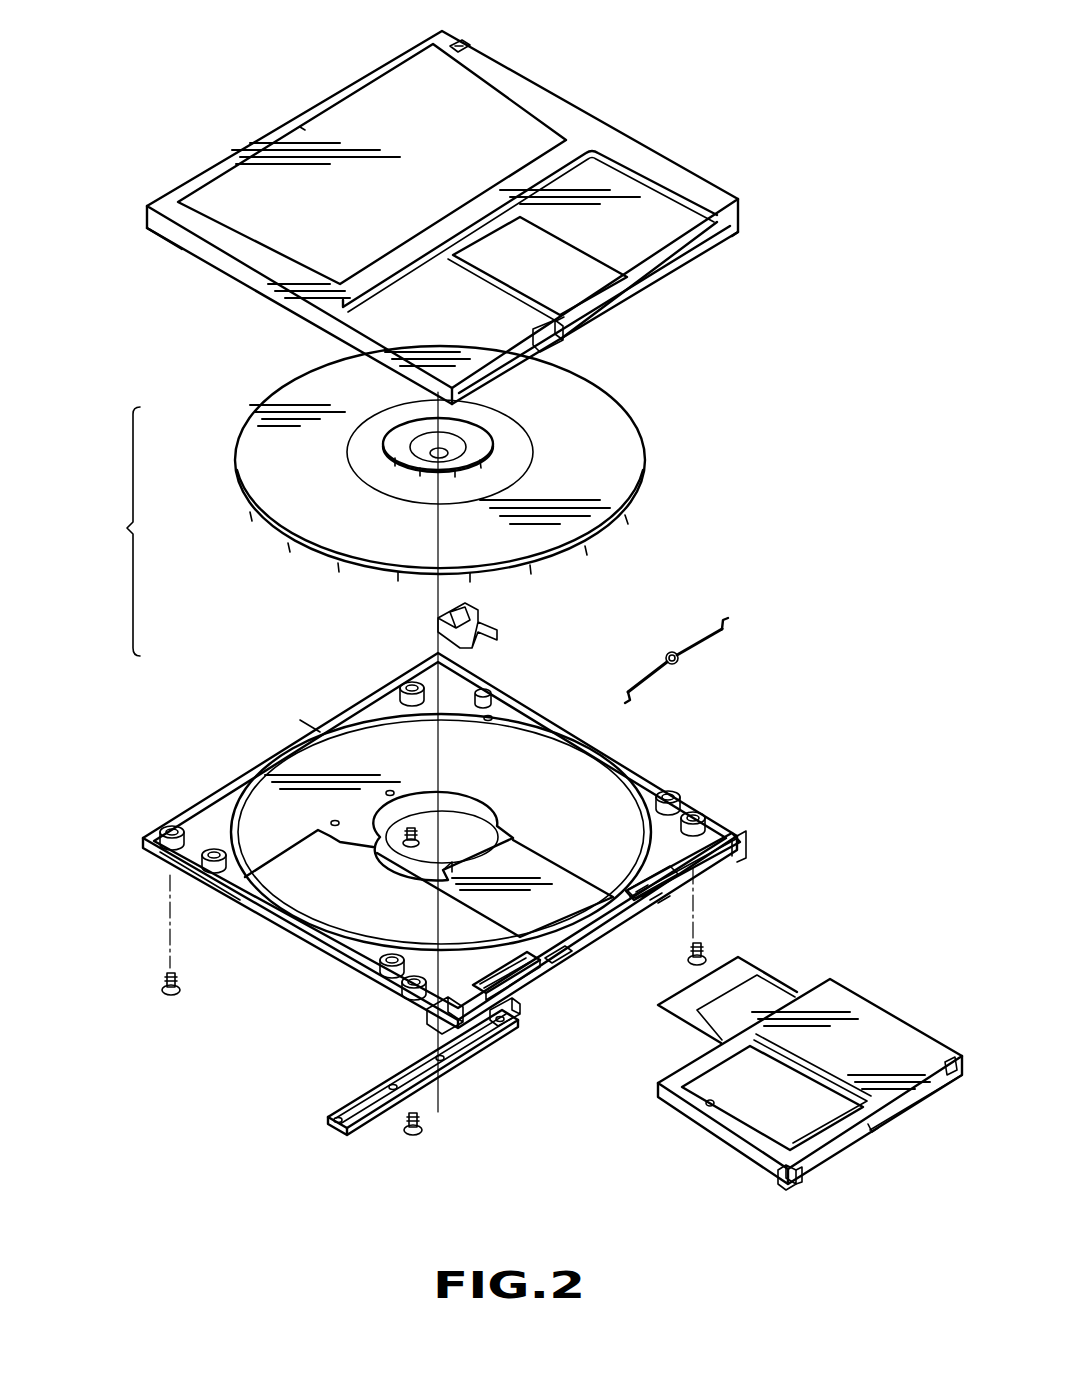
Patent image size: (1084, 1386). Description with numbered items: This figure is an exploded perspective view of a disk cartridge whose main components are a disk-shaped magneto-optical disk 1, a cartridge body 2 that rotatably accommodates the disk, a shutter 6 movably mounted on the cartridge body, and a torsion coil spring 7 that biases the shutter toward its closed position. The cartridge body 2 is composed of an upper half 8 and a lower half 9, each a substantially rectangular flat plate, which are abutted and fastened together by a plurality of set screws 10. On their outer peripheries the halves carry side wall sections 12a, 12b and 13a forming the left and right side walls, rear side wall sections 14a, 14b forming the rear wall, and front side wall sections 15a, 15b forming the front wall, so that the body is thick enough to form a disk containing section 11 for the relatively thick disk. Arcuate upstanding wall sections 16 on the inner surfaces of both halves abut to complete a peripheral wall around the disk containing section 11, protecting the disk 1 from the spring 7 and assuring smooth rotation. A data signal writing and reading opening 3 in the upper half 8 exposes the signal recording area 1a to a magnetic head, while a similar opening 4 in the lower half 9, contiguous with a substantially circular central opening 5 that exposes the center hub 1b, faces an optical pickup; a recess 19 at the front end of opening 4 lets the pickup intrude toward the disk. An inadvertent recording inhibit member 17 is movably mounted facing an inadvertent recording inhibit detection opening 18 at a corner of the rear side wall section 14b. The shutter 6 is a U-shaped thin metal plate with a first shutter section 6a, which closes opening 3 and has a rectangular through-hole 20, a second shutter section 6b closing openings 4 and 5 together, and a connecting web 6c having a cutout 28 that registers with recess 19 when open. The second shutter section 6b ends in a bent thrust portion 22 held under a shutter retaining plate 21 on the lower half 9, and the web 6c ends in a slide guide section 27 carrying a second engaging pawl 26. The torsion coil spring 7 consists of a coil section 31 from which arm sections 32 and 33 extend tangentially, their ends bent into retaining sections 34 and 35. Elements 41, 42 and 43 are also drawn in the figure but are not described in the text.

The magneto-optical disk 1 is at (484, 464).
The signal recording area 1a is at (605, 470).
The center hub 1b is at (480, 448).
The cartridge body 2 is at (114, 531).
The data signal writing and reading opening 3 is at (598, 262).
The data signal writing and reading opening 4 is at (538, 860).
The central opening 5 is at (476, 824).
The shutter 6 is at (805, 1068).
The first shutter section 6a is at (848, 1010).
The second shutter section 6b is at (748, 968).
The connecting section or web 6c is at (902, 1105).
The torsion coil spring 7 is at (682, 643).
The upper half 8 is at (290, 124).
The lower half 9 is at (444, 835).
The set screws 10 is at (178, 996).
The disk containing section 11 is at (318, 762).
The side wall section 12a is at (222, 260).
The side wall section 12b is at (258, 916).
The side wall section 13a is at (636, 144).
The rear side wall section 14a is at (302, 128).
The rear side wall section 14b is at (352, 712).
The front side wall section 15a is at (530, 353).
The front side wall section 15b is at (520, 1008).
The arcuate upstanding wall sections 16 is at (392, 700).
The inadvertent recording inhibit member 17 is at (480, 614).
The inadvertent recording inhibit detection opening 18 is at (462, 688).
The recess 19 is at (570, 944).
The rectangular through-hole 20 is at (706, 1108).
The shutter retaining plate 21 is at (345, 1103).
The thrust portion 22 is at (722, 960).
The second engaging pawl 26 is at (778, 1170).
The slide guide section 27 is at (800, 1184).
The recess or cutout 28 is at (871, 1132).
The coil section 31 is at (668, 650).
The arm section 32 is at (706, 639).
The arm section 33 is at (634, 680).
The retaining section 34 is at (725, 626).
The retaining section 35 is at (626, 699).
The lock member 41 is at (676, 912).
The lock lever 42 is at (645, 910).
The slide portion 43 is at (657, 898).